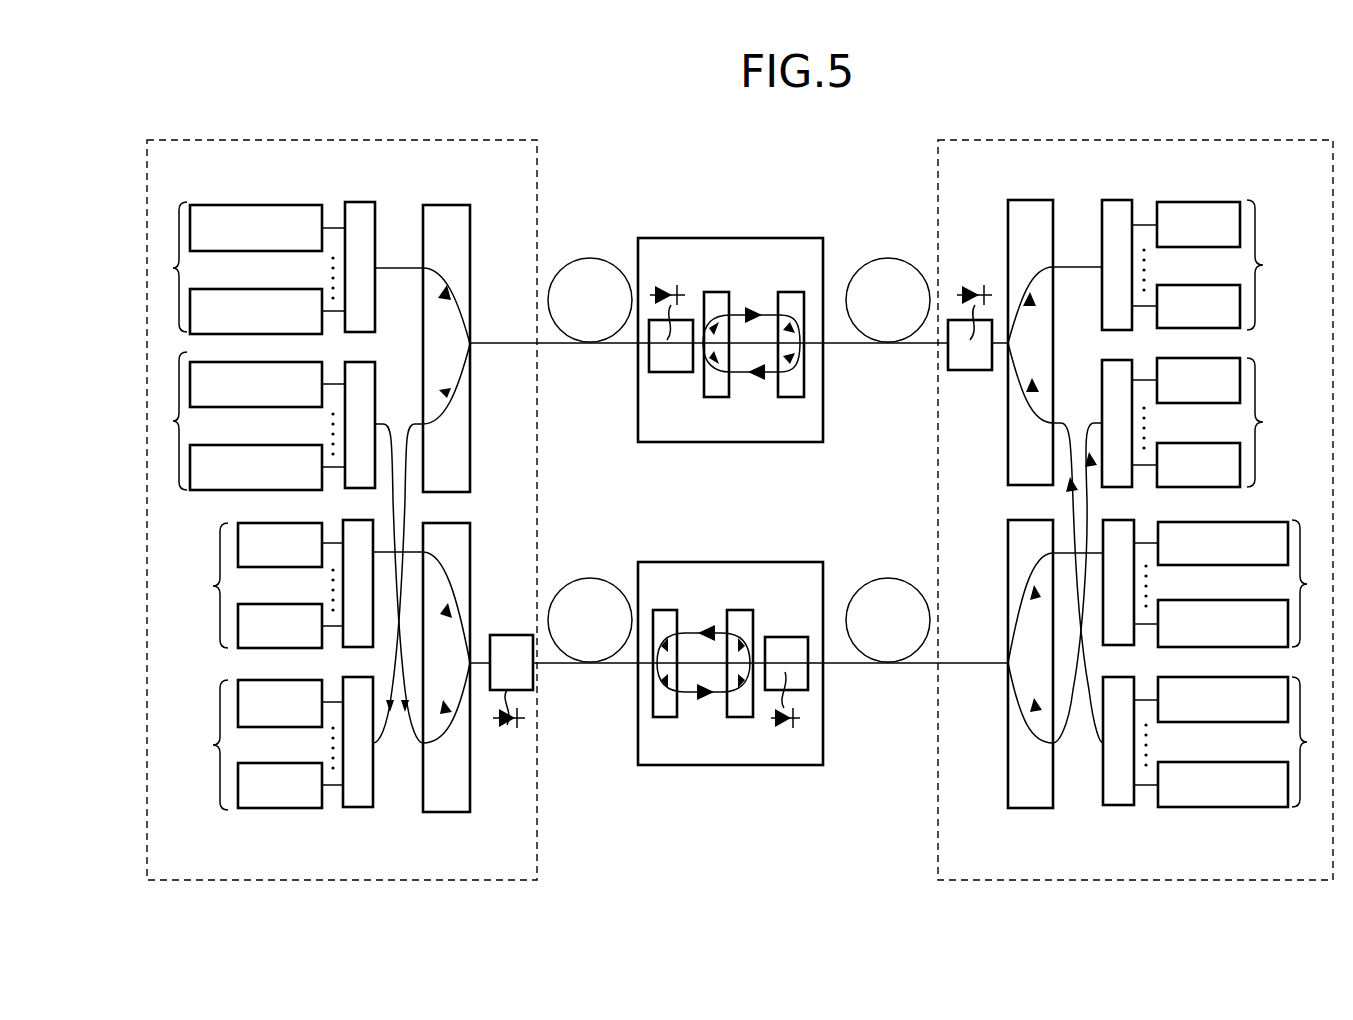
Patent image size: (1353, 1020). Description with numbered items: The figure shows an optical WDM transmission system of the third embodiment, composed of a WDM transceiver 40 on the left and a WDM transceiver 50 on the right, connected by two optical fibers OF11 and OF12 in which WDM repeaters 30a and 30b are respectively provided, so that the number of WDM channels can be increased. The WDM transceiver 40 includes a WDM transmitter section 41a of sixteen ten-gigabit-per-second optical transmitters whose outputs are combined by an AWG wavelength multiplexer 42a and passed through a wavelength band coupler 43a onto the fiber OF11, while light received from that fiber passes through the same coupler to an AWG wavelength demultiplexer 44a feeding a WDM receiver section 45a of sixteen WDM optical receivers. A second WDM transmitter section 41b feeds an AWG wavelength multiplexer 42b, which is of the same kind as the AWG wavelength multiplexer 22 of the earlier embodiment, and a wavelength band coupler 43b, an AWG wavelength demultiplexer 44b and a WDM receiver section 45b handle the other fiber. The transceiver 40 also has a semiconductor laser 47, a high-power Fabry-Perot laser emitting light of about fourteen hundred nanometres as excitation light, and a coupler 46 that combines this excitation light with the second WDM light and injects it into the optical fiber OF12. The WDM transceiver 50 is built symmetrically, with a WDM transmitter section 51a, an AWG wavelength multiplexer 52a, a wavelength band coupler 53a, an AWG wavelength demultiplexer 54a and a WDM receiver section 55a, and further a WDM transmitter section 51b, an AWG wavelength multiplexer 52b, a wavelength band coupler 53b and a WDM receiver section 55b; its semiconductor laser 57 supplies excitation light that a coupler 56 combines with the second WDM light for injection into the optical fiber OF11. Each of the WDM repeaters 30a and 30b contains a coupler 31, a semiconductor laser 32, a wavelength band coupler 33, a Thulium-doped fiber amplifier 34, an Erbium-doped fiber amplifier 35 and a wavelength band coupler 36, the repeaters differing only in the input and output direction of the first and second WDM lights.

The WDM transceiver 40 is at (326, 140).
The WDM transceiver 50 is at (1114, 140).
The WDM transmitter section 41a is at (173, 266).
The WDM transmitter section 41b is at (173, 492).
The AWG wavelength multiplexer 42a is at (360, 202).
The AWG wavelength multiplexer 42b is at (367, 362).
The wavelength band coupler 43a is at (446, 205).
The wavelength band coupler 43b is at (447, 812).
The AWG wavelength demultiplexer 44a is at (356, 807).
The AWG wavelength demultiplexer 44b is at (356, 520).
The WDM receiver section 45a is at (247, 745).
The WDM receiver section 45b is at (247, 585).
The coupler 46 is at (507, 635).
The semiconductor laser 47 is at (507, 728).
The optical fiber OF11 is at (590, 258).
The optical fiber OF12 is at (590, 578).
The WDM repeater 30a is at (730, 238).
The WDM repeater 30b is at (733, 562).
The coupler 31 is at (671, 372).
The semiconductor laser 32 is at (665, 295).
The wavelength band coupler 33 is at (716, 292).
The Thulium-doped fiber amplifier 34 is at (757, 313).
The Erbium-doped fiber amplifier 35 is at (757, 376).
The wavelength band coupler 36 is at (790, 292).
The wavelength band coupler 53a is at (1030, 200).
The wavelength band coupler 53b is at (1030, 808).
The AWG wavelength demultiplexer 54a is at (1117, 200).
The AWG wavelength multiplexer 22 is at (1102, 360).
The WDM receiver section 55a is at (1227, 265).
The WDM receiver section 55b is at (1227, 422).
The coupler 56 is at (973, 370).
The semiconductor laser 57 is at (973, 295).
The AWG wavelength multiplexer 52a is at (1118, 805).
The AWG wavelength multiplexer 52b is at (1118, 520).
The WDM transmitter section 51a is at (1308, 744).
The WDM transmitter section 51b is at (1308, 582).